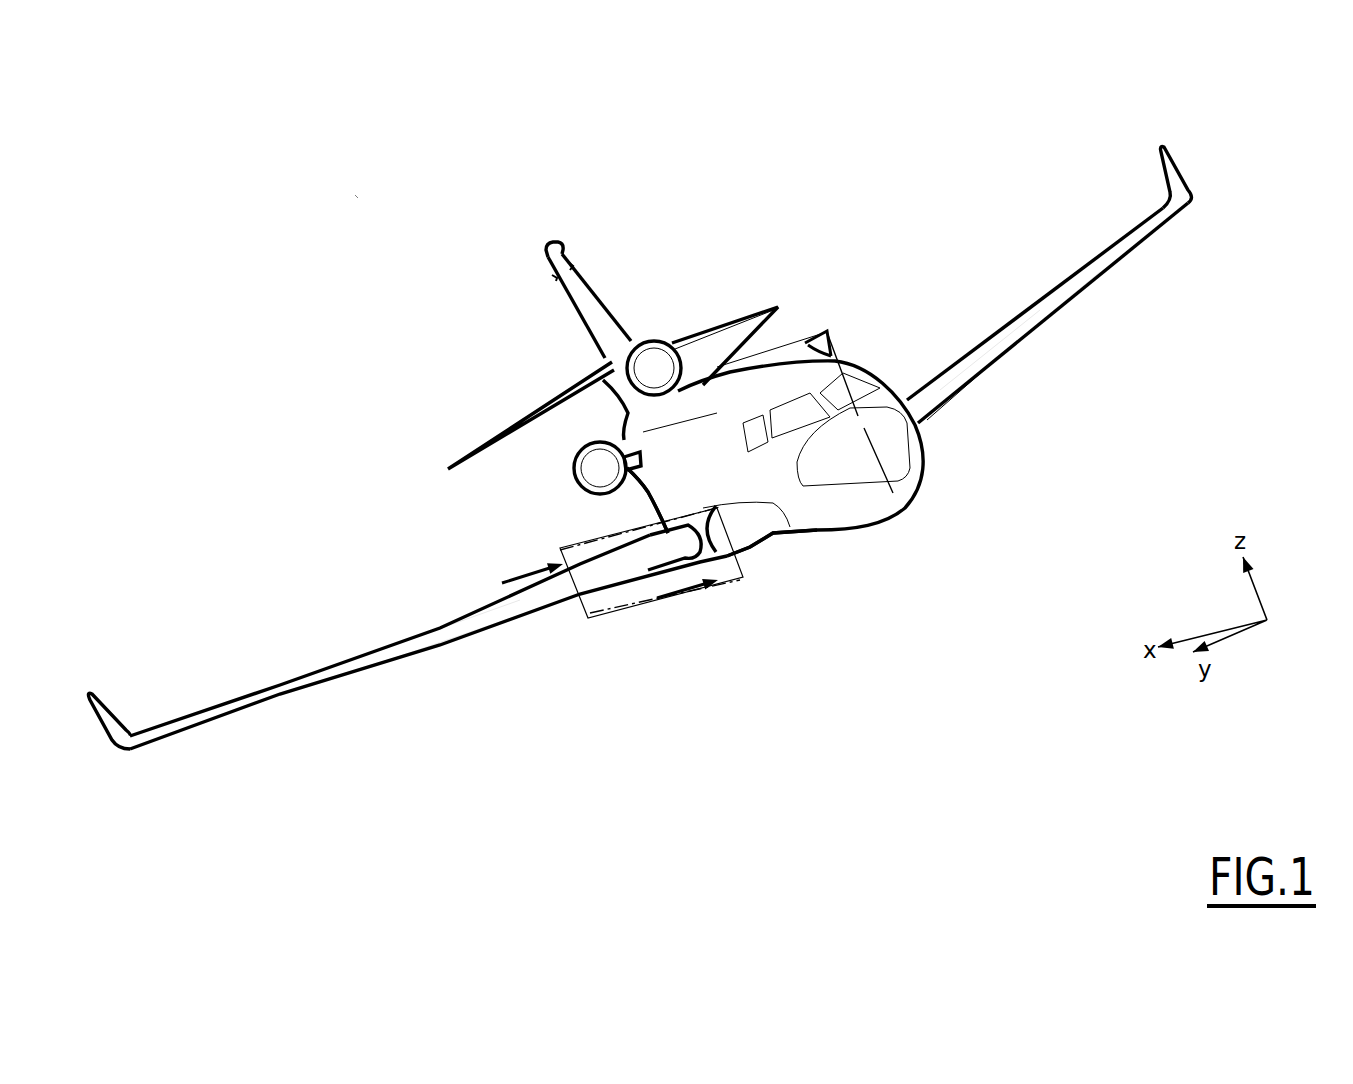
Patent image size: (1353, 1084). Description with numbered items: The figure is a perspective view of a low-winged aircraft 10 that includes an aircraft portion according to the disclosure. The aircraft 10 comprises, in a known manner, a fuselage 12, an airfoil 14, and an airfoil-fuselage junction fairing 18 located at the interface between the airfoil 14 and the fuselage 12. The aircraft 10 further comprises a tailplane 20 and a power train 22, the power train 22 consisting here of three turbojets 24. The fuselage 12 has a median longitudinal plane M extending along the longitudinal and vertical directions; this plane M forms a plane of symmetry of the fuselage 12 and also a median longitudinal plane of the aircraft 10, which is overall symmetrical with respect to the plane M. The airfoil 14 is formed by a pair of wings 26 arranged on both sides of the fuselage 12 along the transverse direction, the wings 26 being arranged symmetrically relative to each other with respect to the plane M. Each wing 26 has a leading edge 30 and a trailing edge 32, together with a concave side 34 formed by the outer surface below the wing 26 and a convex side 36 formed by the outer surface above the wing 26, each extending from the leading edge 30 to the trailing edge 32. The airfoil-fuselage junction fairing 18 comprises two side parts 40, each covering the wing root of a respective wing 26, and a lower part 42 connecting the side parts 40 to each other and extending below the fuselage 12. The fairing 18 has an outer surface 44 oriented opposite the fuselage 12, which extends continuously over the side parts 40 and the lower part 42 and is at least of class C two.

The aircraft 10 is at (358, 198).
The fuselage 12 is at (775, 385).
The airfoil 14 is at (1018, 316).
The airfoil-fuselage junction fairing 18 is at (762, 541).
The tailplane 20 is at (600, 298).
The power train 22 is at (615, 357).
The turbojet 24 is at (658, 343).
The wing 26 is at (1062, 307).
The leading edge 30 is at (993, 352).
The trailing edge 32 is at (975, 347).
The concave side 34 is at (945, 401).
The convex side 36 is at (953, 375).
The side part 40 is at (748, 532).
The lower part 42 is at (786, 542).
The outer surface 44 is at (657, 506).
The median longitudinal plane M is at (838, 342).